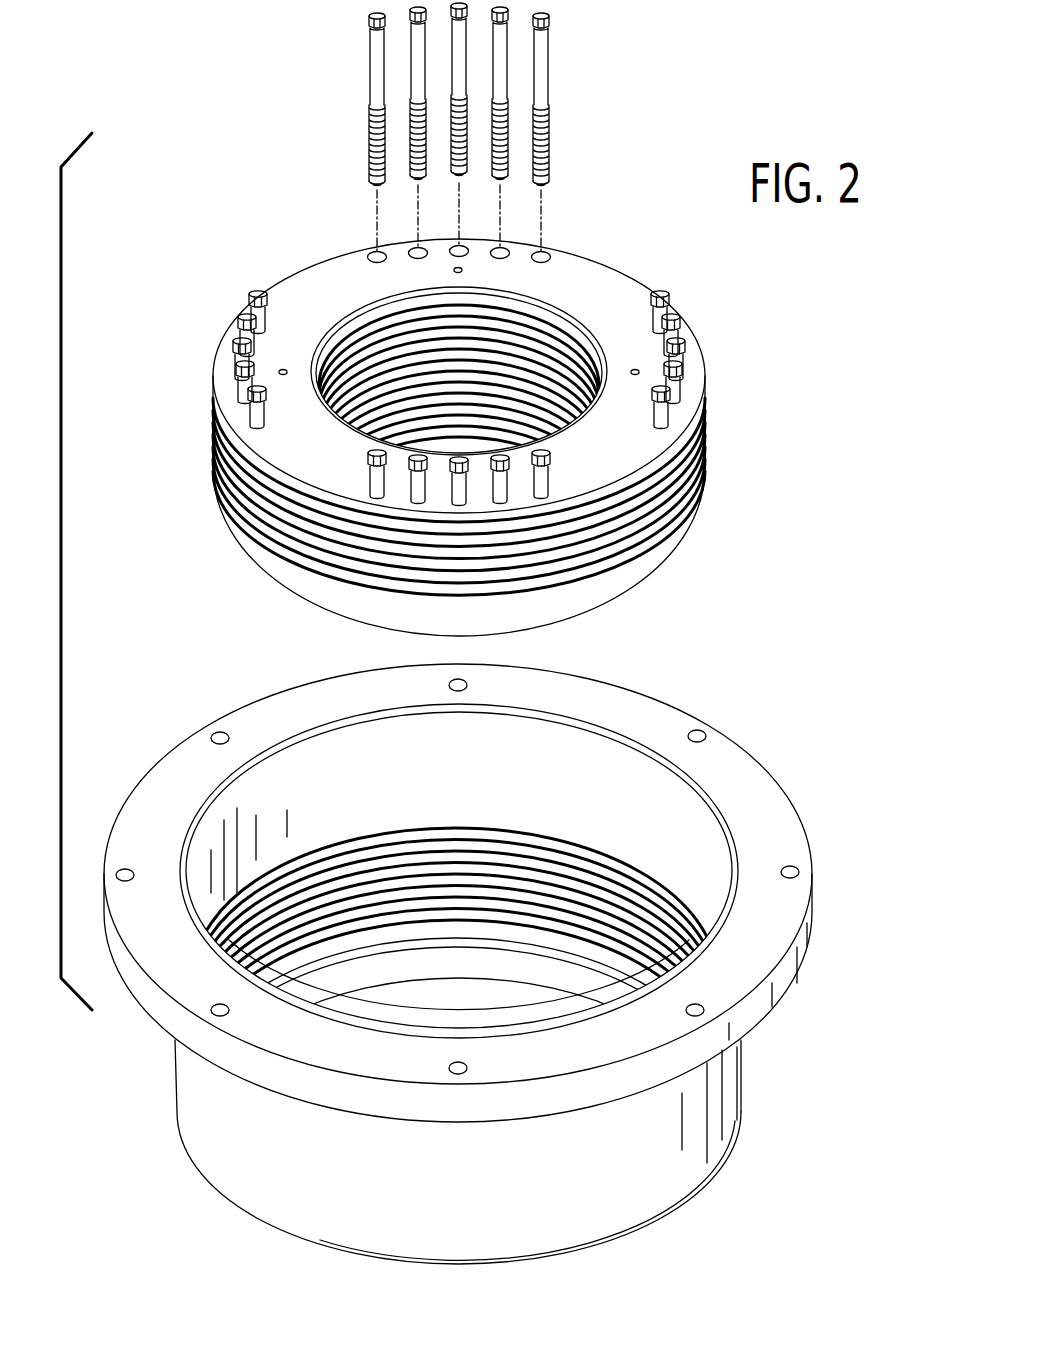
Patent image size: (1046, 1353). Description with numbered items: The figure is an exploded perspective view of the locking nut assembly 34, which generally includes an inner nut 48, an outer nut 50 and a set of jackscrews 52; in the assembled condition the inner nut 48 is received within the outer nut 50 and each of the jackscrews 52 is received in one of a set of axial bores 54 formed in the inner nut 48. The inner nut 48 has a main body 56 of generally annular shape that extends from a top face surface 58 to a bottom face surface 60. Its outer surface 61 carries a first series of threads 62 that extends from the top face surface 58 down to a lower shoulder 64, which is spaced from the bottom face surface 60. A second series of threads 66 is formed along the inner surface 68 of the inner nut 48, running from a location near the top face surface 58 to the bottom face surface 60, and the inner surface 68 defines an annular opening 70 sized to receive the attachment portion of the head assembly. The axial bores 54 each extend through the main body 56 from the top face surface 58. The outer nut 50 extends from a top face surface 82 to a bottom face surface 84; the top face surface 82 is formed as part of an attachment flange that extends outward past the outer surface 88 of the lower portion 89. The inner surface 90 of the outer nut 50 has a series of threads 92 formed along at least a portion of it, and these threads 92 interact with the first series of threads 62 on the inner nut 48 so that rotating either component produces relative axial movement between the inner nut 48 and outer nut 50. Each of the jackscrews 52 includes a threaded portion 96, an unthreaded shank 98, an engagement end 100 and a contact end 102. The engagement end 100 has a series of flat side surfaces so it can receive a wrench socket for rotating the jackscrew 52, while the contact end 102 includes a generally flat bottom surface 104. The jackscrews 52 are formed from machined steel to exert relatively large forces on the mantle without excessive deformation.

The locking nut assembly 34 is at (679, 261).
The inner nut 48 is at (714, 369).
The outer nut 50 is at (773, 1065).
The jackscrews 52 is at (549, 72).
The axial bores 54 is at (550, 253).
The main body 56 is at (663, 550).
The top face surface 58 is at (607, 288).
The bottom face surface 60 is at (632, 602).
The outer surface 61 is at (213, 436).
The first series of threads 62 is at (706, 434).
The lower shoulder 64 is at (703, 483).
The second series of threads 66 is at (670, 304).
The inner surface 68 is at (528, 302).
The annular opening 70 is at (413, 445).
The top face surface 82 is at (626, 707).
The bottom face surface 84 is at (689, 1194).
The outer surface 88 is at (744, 1088).
The lower portion 89 is at (724, 1118).
The inner surface 90 is at (292, 776).
The series of threads 92 is at (599, 867).
The threaded portion 96 is at (368, 142).
The unthreaded shank 98 is at (369, 72).
The engagement end 100 is at (369, 18).
The contact end 102 is at (374, 186).
The flat bottom surface 104 is at (544, 186).